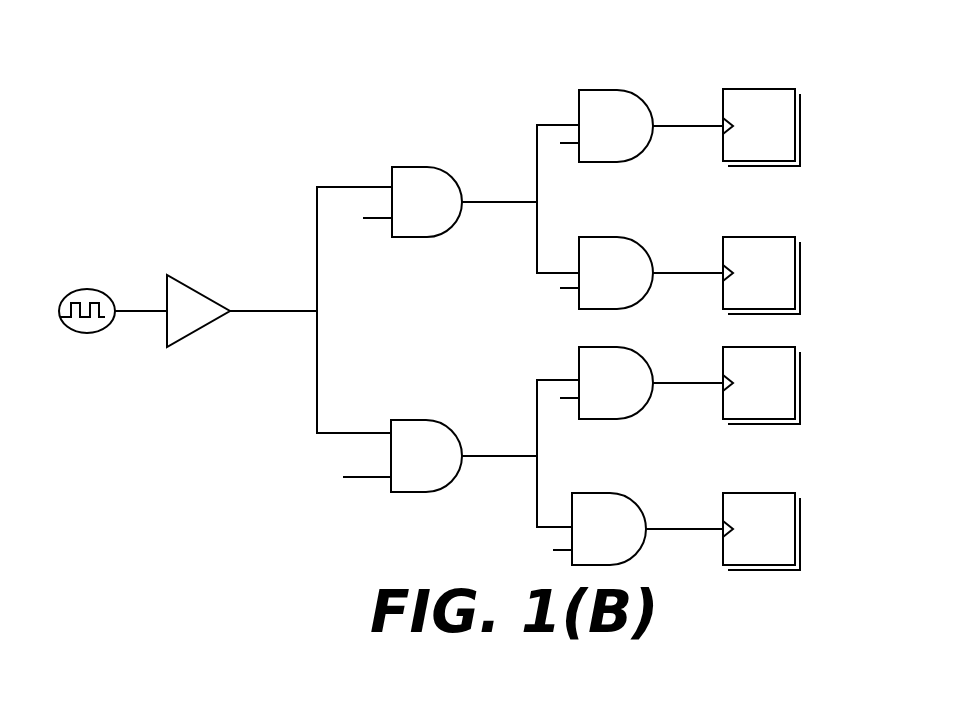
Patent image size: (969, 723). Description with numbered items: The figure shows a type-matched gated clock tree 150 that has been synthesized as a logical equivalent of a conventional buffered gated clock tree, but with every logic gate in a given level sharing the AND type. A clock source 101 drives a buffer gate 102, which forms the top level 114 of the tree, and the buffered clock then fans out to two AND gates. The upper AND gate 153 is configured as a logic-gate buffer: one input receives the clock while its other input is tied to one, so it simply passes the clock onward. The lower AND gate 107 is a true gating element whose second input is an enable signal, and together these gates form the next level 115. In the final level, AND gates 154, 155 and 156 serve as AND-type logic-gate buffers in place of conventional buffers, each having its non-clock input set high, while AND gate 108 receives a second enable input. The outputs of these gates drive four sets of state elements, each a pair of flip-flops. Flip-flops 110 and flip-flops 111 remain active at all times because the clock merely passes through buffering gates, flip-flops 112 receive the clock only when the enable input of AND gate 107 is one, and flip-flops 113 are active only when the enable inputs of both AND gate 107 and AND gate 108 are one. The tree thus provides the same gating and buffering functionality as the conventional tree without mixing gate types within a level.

The clock source 101 is at (80, 290).
The buffer gate 102 is at (200, 290).
The AND gate 107 is at (415, 418).
The AND gate 108 is at (618, 494).
The flip-flops 110 is at (757, 88).
The flip-flops 111 is at (768, 236).
The flip-flops 112 is at (790, 346).
The flip-flops 113 is at (778, 492).
The top level 114 is at (325, 490).
The level 115 is at (520, 566).
The type-matched gated clock tree 150 is at (344, 149).
The AND gate 153 is at (423, 238).
The AND-type logic gate buffer 154 is at (635, 91).
The AND-type logic gate buffer 155 is at (622, 238).
The AND-type logic gate buffer 156 is at (617, 348).